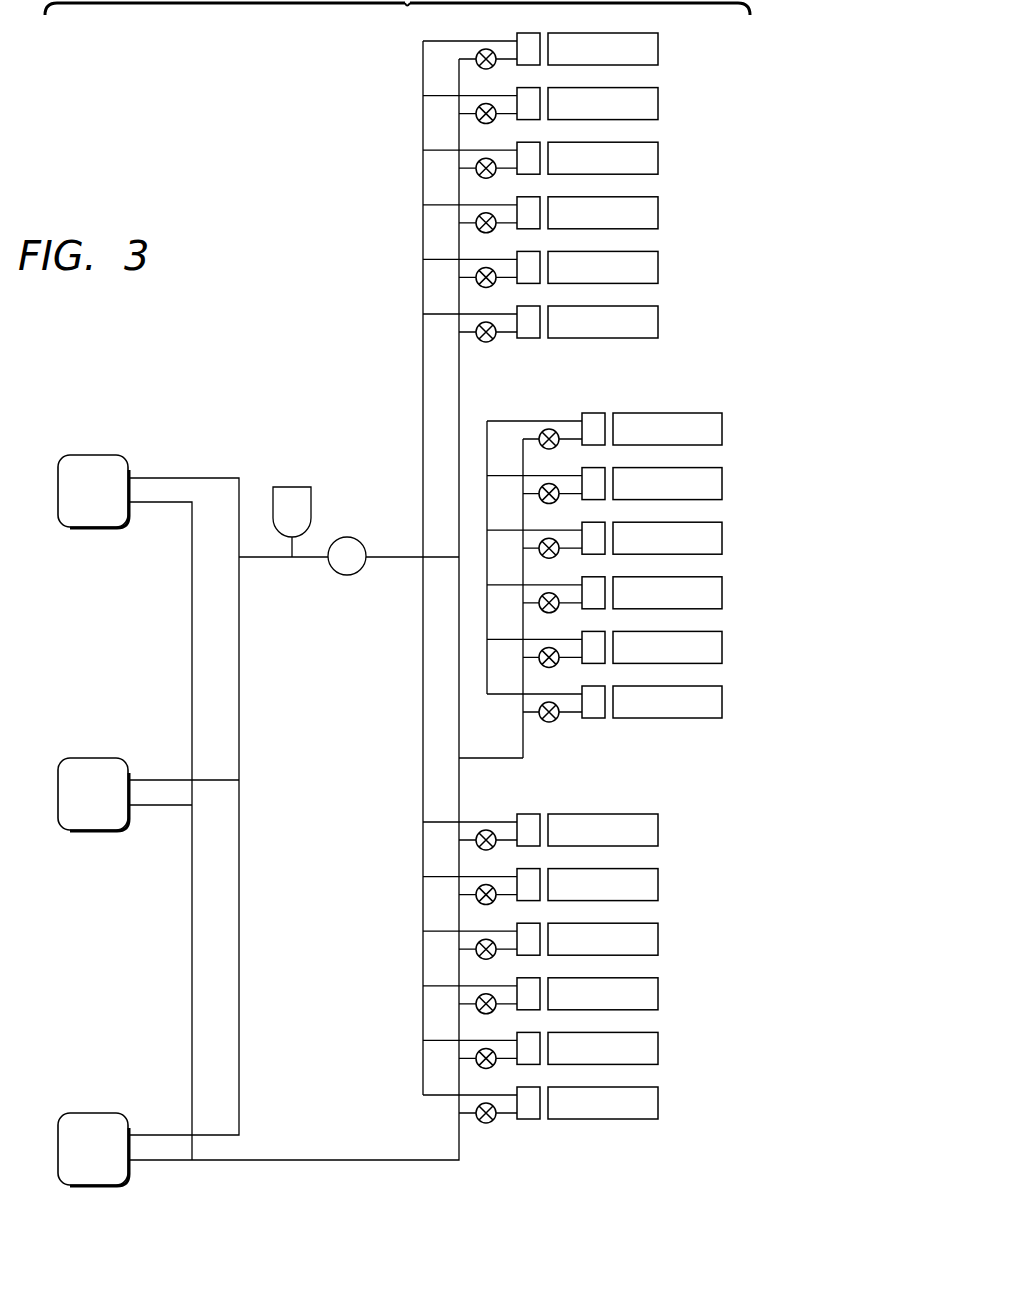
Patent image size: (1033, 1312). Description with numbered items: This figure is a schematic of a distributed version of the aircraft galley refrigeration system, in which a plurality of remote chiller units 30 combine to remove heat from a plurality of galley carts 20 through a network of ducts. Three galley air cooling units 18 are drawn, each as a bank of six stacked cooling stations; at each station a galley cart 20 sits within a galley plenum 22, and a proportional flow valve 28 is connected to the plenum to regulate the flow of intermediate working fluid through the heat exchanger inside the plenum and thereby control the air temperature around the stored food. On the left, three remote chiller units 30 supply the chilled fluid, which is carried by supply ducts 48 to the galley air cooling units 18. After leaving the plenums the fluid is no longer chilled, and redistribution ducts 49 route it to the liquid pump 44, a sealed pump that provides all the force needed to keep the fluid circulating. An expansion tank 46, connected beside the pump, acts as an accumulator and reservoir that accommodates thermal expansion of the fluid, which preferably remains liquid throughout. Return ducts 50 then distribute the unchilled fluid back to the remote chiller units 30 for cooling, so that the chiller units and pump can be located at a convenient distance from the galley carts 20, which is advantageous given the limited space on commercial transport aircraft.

The galley air cooling unit 18 is at (683, 137).
The galley cart 20 is at (578, 343).
The galley plenum 22 is at (526, 341).
The proportional flow valve 28 is at (488, 348).
The remote chiller unit 30 is at (90, 455).
The liquid pump 44 is at (337, 571).
The expansion tank 46 is at (289, 487).
The supply duct 48 is at (459, 722).
The redistribution duct 49 is at (403, 557).
The return duct 50 is at (240, 680).